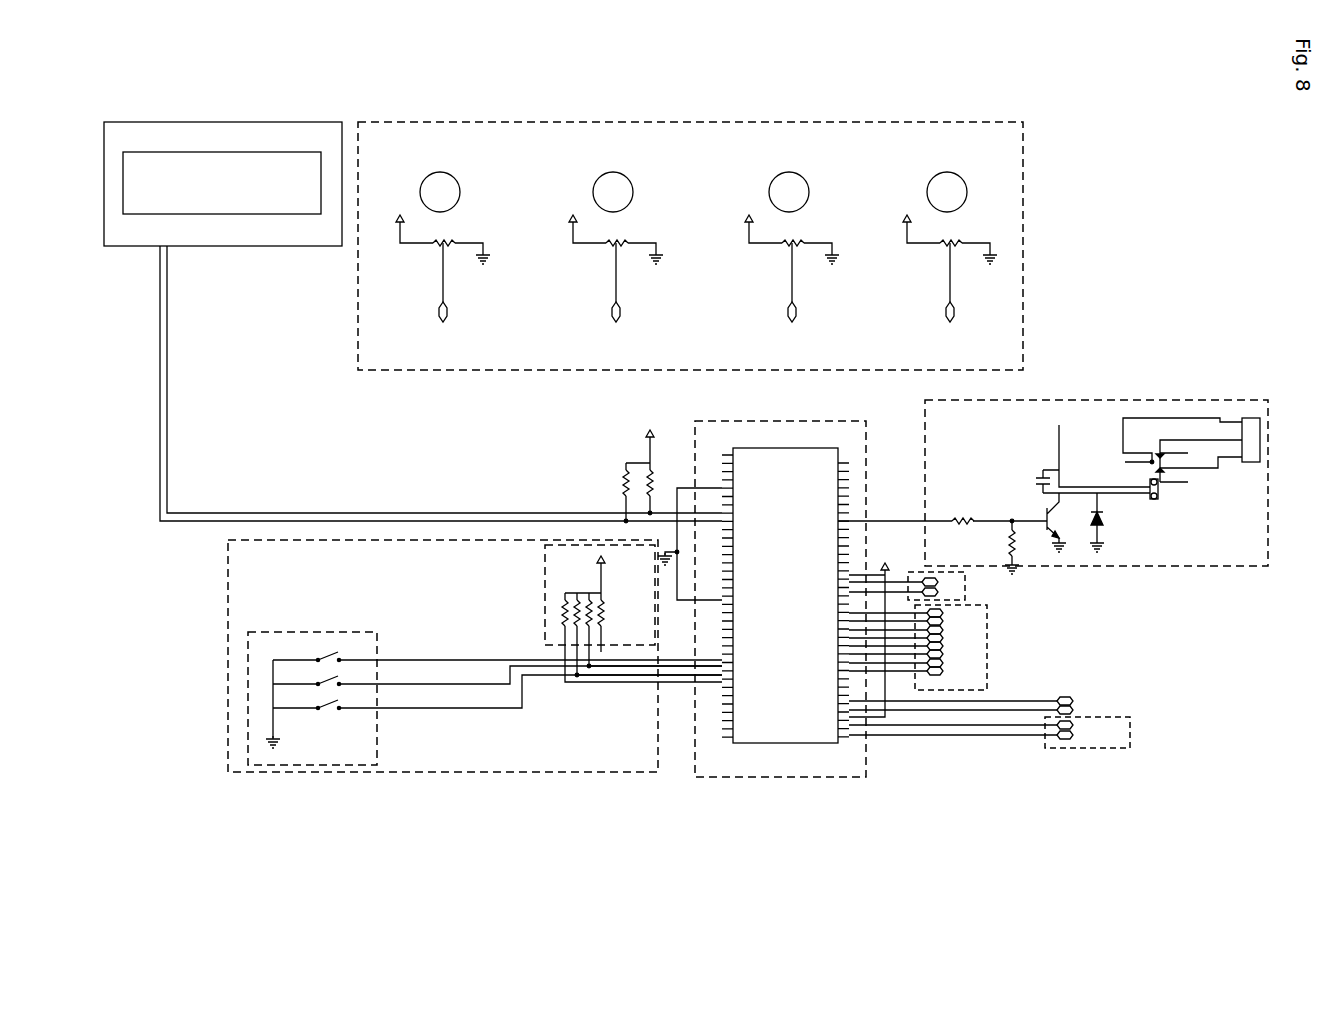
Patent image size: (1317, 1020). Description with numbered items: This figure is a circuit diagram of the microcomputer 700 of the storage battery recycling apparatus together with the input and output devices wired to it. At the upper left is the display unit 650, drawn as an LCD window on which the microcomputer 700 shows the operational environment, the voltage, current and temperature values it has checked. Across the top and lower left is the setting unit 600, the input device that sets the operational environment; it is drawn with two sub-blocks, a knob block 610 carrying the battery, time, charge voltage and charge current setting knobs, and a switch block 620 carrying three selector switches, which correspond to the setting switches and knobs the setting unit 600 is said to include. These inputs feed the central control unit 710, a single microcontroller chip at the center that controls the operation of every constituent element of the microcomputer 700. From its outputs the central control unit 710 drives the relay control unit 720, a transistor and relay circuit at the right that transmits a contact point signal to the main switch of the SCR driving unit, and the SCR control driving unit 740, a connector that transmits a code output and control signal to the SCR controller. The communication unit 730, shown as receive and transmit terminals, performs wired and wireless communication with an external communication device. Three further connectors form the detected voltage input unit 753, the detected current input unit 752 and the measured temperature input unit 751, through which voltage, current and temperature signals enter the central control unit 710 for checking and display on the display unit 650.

The setting unit 600 is at (226, 632).
The knob setting unit 610 is at (436, 122).
The switch unit 620 is at (250, 705).
The display unit 650 is at (180, 118).
The microcomputer 700 is at (918, 748).
The central control unit 710 is at (760, 778).
The relay control unit 720 is at (1097, 400).
The communication unit 730 is at (965, 588).
The SCR control driving unit 740 is at (987, 645).
The measured temperature input unit 751 is at (1070, 748).
The detected current input unit 752 is at (1085, 711).
The detected voltage input unit 753 is at (1080, 698).